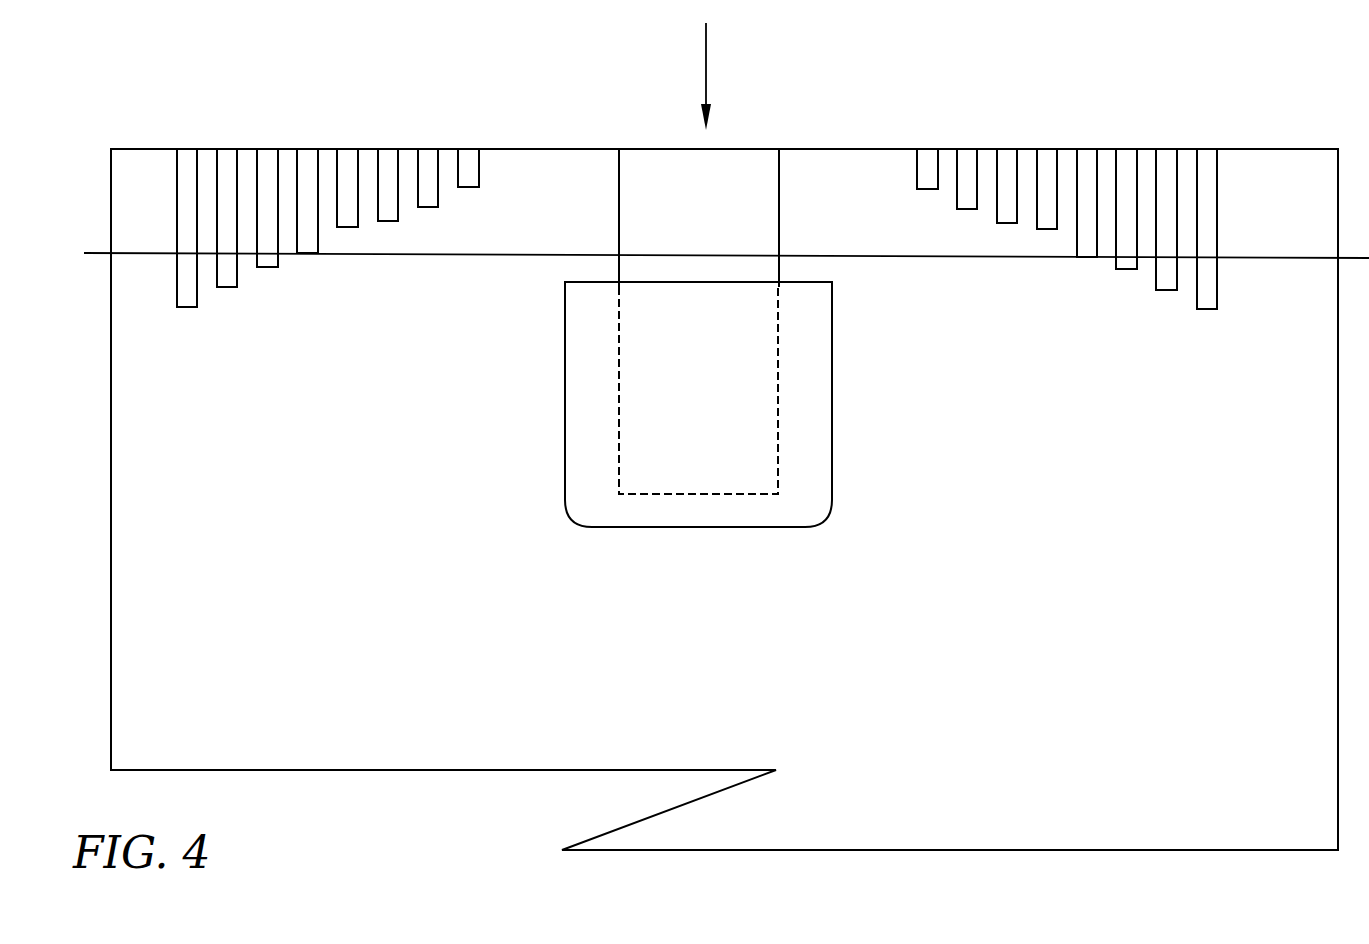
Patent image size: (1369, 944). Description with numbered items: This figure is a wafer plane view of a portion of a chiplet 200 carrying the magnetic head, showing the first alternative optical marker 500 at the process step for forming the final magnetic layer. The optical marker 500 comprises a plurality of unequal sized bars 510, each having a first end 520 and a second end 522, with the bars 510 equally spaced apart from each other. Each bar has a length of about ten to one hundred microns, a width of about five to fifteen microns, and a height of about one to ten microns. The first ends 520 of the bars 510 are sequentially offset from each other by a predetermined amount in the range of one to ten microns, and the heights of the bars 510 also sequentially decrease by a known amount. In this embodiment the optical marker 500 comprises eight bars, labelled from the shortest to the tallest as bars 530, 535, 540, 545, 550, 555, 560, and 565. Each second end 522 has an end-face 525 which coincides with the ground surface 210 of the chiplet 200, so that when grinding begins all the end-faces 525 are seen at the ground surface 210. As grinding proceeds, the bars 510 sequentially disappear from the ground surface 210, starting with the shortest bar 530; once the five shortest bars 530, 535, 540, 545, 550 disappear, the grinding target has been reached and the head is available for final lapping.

The chiplet 200 is at (364, 791).
The ground surface 210 is at (1298, 149).
The optical marker 500 is at (210, 118).
The bars 510 is at (350, 158).
The first end 520 is at (430, 198).
The second end 522 is at (190, 157).
The end-face 525 is at (430, 149).
The shortest bar 530 is at (930, 158).
The bar 535 is at (972, 158).
The bar 540 is at (1008, 160).
The bar 545 is at (1043, 158).
The bar 550 is at (1088, 158).
The bar 555 is at (1128, 158).
The bar 560 is at (1168, 160).
The tallest bar 565 is at (1210, 158).